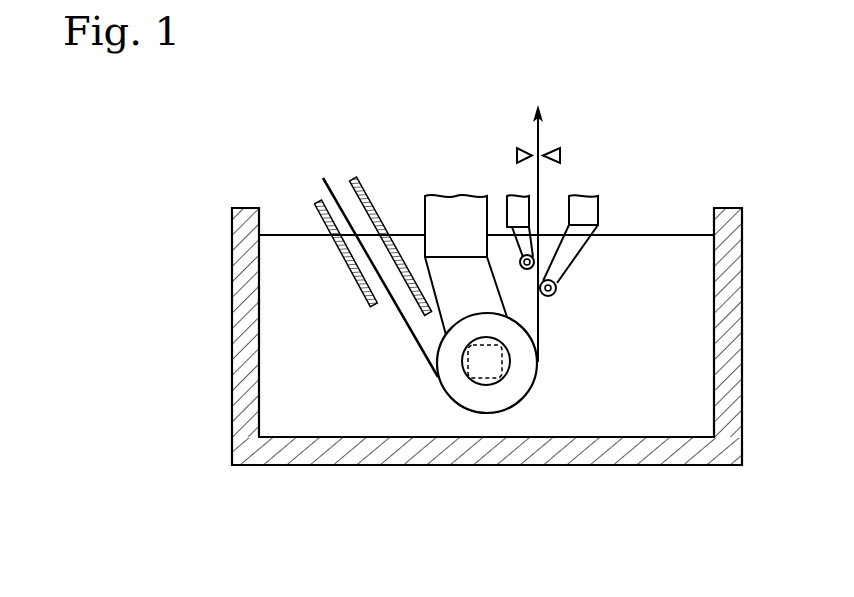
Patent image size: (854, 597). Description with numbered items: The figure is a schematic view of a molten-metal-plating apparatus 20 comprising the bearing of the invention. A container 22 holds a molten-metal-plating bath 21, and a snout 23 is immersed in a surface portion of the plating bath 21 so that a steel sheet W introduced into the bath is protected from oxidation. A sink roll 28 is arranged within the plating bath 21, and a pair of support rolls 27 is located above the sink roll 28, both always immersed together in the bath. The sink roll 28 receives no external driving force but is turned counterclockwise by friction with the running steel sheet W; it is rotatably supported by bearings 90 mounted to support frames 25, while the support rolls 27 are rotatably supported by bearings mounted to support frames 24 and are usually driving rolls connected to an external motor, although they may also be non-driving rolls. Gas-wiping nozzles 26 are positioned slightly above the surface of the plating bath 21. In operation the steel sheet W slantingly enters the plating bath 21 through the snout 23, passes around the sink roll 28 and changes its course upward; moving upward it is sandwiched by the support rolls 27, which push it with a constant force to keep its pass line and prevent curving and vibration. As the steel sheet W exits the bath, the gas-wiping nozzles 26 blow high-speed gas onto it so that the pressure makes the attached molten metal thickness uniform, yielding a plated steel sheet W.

The molten-metal-plating apparatus 20 is at (224, 161).
The molten-metal-plating bath 21 is at (274, 425).
The container 22 is at (238, 395).
The snout 23 is at (318, 205).
The support frames 24 is at (523, 208).
The support frames 25 is at (443, 195).
The gas-wiping nozzles 26 is at (523, 152).
The support rolls 27 is at (557, 287).
The sink roll 28 is at (450, 387).
The bearings 90 is at (495, 375).
The steel sheet W is at (540, 137).